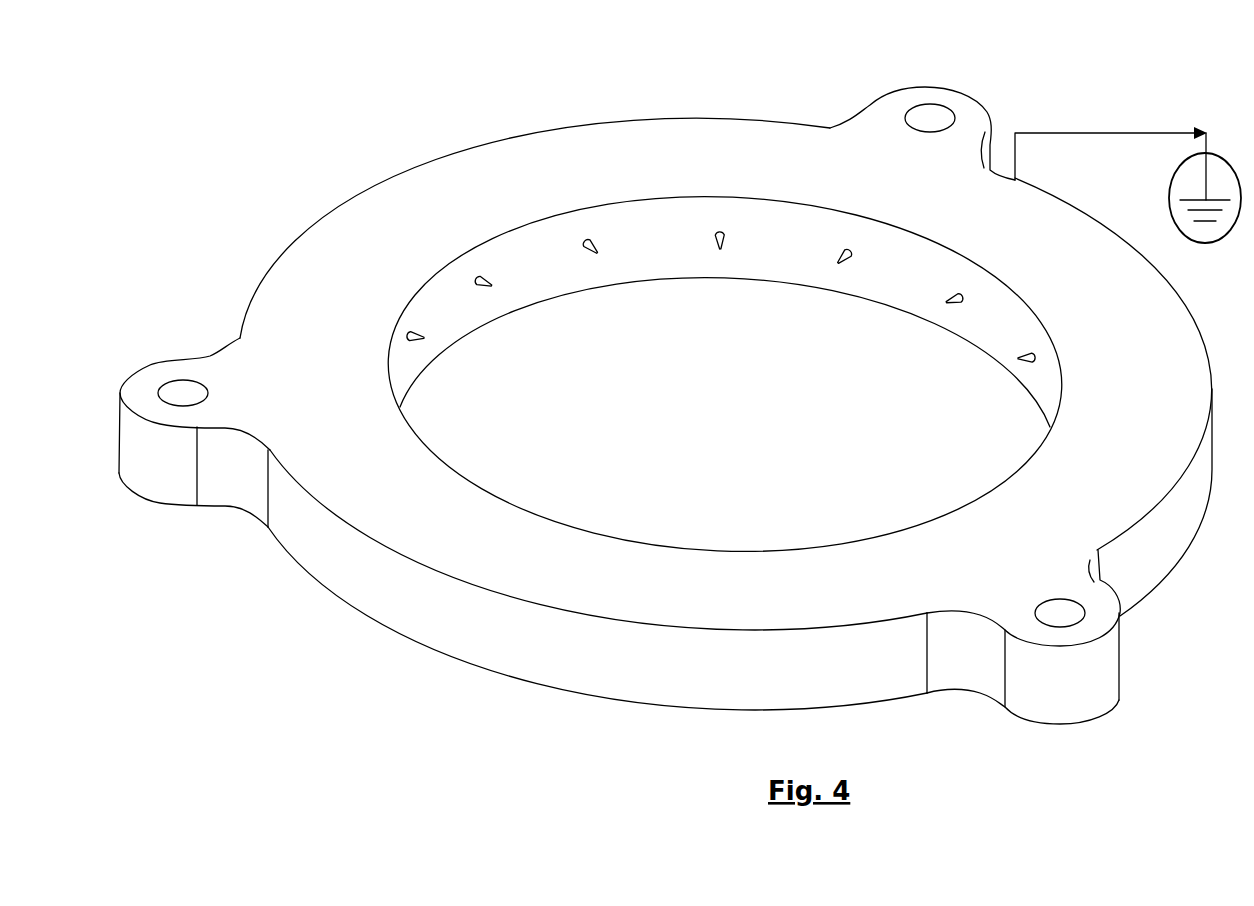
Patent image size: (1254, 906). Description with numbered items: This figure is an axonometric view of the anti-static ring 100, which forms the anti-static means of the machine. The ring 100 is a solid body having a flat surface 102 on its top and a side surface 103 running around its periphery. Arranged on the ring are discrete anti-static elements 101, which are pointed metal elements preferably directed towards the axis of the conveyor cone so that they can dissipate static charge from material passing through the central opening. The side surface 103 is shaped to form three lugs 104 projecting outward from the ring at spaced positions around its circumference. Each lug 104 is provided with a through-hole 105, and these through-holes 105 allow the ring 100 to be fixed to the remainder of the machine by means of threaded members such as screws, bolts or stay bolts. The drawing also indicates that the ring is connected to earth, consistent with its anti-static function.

The anti-static ring 100 is at (462, 118).
The discrete anti-static elements 101 is at (594, 254).
The flat surface 102 is at (726, 374).
The side surface 103 is at (378, 590).
The lugs 104 is at (162, 366).
The through-hole 105 is at (937, 116).